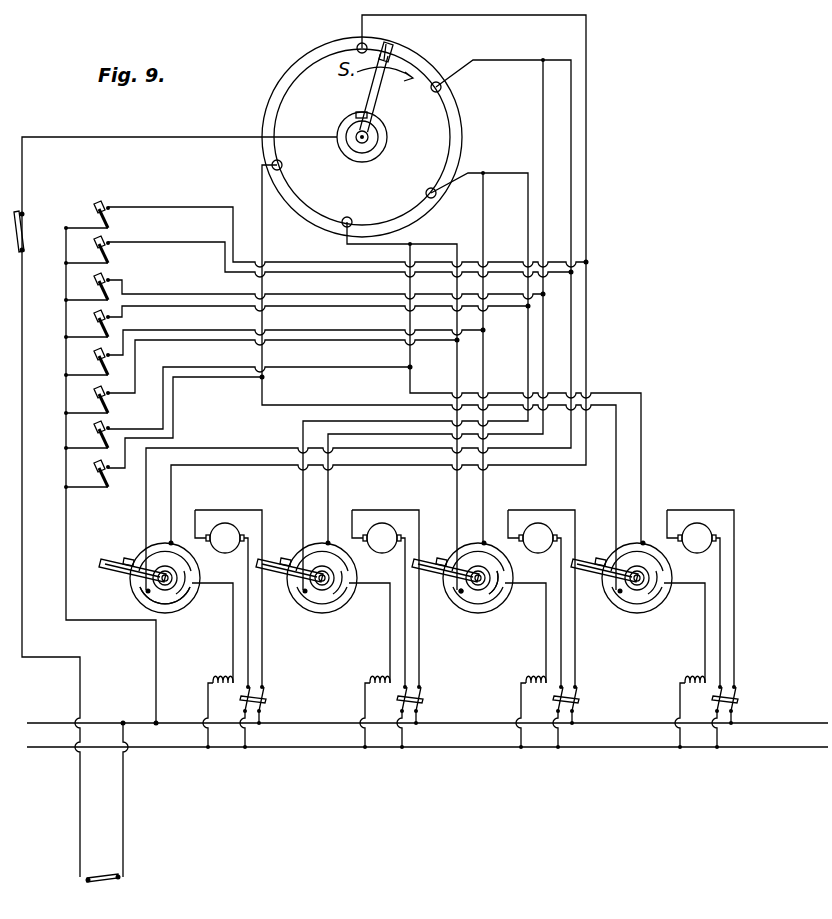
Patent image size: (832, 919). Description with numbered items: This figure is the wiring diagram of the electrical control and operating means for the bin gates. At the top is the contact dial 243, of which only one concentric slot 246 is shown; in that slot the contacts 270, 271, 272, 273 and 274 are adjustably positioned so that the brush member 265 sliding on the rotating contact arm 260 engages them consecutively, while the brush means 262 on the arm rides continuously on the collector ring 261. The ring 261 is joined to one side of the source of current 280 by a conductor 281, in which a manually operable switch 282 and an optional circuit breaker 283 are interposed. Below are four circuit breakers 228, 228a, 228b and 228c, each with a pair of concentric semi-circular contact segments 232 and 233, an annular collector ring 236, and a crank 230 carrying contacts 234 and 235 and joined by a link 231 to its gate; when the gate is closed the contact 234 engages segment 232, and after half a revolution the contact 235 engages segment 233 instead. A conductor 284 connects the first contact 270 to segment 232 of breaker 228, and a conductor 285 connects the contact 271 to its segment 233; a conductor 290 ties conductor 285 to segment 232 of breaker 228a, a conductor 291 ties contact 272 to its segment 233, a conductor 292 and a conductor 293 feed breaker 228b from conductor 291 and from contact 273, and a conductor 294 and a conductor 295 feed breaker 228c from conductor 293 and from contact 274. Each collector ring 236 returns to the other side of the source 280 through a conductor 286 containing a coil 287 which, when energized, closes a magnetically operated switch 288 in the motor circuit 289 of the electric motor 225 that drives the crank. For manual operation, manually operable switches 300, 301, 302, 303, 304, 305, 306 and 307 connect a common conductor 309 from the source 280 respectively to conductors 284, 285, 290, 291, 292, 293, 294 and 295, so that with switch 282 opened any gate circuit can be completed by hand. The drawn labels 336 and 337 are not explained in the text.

The contact dial 243 is at (294, 49).
The concentric slot 246 is at (266, 108).
The collector ring 261 is at (388, 136).
The contact arm 260 is at (380, 103).
The brush member 265 is at (393, 50).
The brush means 262 is at (358, 112).
The contact 270 is at (358, 45).
The contact 271 is at (439, 82).
The contact 272 is at (427, 190).
The contact 273 is at (349, 218).
The contact 274 is at (283, 166).
The conductor 284 is at (588, 173).
The conductor 285 is at (573, 213).
The conductor 290 is at (543, 141).
The conductor 291 is at (527, 204).
The conductor 292 is at (481, 222).
The conductor 293 is at (437, 244).
The conductor 294 is at (412, 390).
The conductor 295 is at (262, 187).
The conductor 281 is at (86, 139).
The manually operable switch 282 is at (62, 203).
The circuit breaker 283 is at (103, 882).
The source of current 280 is at (305, 746).
The conductor 309 is at (66, 523).
The electrical contact 234 is at (134, 617).
The manually operable switch 300 is at (322, 232).
The manually operable switch 301 is at (100, 251).
The manually operable switch 302 is at (112, 292).
The manually operable switch 303 is at (100, 326).
The manually operable switch 304 is at (100, 363).
The manually operable switch 305 is at (100, 402).
The manually operable switch 306 is at (100, 438).
The manually operable switch 307 is at (100, 474).
The circuit breaker 228 is at (393, 614).
The circuit breaker 228a is at (348, 619).
The circuit breaker 228b is at (480, 619).
The circuit breaker 228c is at (639, 621).
The contact segment 232 is at (150, 563).
The contact segment 233 is at (173, 619).
The collector ring 236 is at (204, 602).
The link 231 is at (98, 568).
The electrical contact 235 is at (107, 550).
The crank 230 is at (111, 587).
The electric motor 225 is at (464, 528).
The motor circuit 289 is at (255, 598).
The conductor 286 is at (210, 670).
The coil 287 is at (343, 716).
The magnetically operated switch 288 is at (442, 717).
The contact 337 is at (462, 606).
The contact segment 336 is at (488, 606).